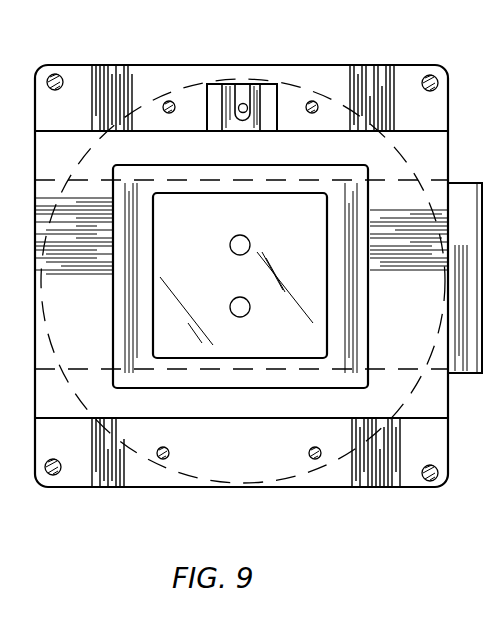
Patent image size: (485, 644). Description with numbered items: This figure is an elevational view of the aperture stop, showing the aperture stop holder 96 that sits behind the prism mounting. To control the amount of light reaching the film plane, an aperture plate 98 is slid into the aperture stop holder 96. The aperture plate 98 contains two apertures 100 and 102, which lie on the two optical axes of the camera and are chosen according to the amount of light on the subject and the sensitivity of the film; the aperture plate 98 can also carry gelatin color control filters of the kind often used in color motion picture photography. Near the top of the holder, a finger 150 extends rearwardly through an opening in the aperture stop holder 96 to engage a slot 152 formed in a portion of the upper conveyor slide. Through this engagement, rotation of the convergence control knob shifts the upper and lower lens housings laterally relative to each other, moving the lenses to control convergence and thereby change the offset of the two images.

The aperture stop holder 96 is at (408, 73).
The aperture plate 98 is at (220, 288).
The aperture 100 is at (250, 241).
The aperture 102 is at (235, 316).
The finger 150 is at (249, 106).
The slot 152 is at (243, 98).